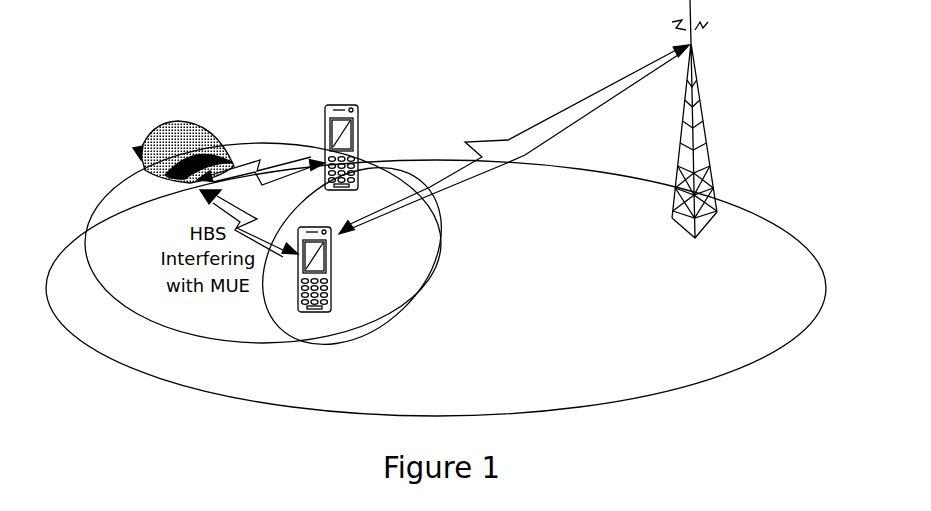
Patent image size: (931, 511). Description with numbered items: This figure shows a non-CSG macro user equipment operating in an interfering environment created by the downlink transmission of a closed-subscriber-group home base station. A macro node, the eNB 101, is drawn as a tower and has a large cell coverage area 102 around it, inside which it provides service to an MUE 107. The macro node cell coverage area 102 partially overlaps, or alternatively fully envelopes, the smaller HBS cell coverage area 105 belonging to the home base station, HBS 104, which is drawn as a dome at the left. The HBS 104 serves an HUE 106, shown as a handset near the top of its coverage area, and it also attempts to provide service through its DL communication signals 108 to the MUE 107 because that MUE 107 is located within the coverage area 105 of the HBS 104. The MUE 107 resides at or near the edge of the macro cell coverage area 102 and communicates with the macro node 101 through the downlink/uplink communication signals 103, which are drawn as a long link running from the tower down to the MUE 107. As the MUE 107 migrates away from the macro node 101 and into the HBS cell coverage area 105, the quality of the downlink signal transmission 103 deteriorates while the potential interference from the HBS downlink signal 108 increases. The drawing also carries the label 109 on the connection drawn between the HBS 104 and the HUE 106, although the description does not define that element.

The macro node (eNB) 101 is at (764, 98).
The cell coverage area 102 is at (640, 394).
The downlink/uplink (DL/UL) communication signals 103 is at (532, 126).
The home base station (HBS) 104 is at (170, 130).
The HBS cell coverage area 105 is at (440, 257).
The HUE 106 is at (358, 135).
The MUE 107 is at (332, 307).
The DL/UL communication signals of the HBS 108 is at (295, 345).
The HBS to HUE communication link 109 is at (260, 163).